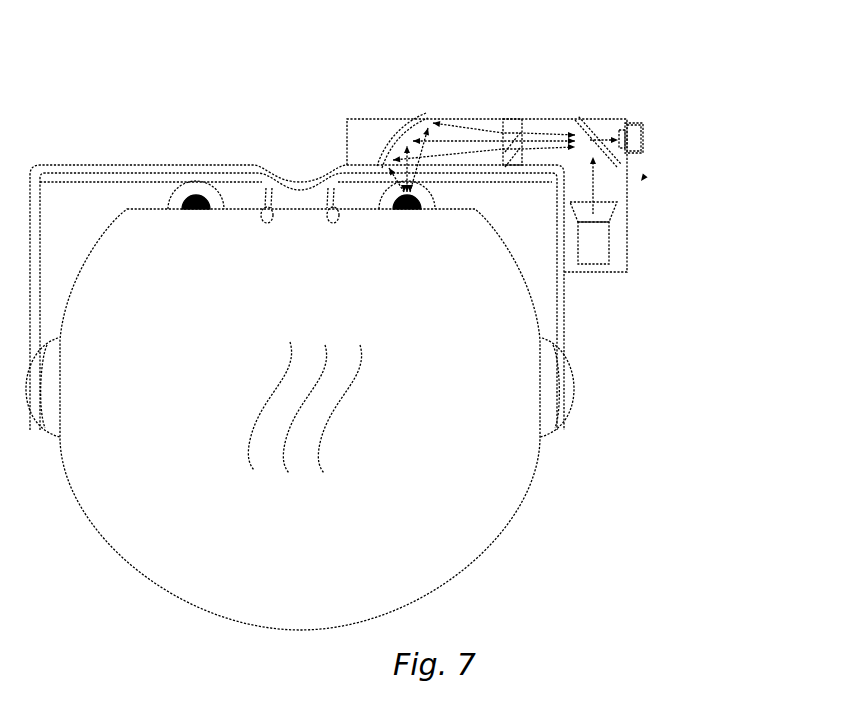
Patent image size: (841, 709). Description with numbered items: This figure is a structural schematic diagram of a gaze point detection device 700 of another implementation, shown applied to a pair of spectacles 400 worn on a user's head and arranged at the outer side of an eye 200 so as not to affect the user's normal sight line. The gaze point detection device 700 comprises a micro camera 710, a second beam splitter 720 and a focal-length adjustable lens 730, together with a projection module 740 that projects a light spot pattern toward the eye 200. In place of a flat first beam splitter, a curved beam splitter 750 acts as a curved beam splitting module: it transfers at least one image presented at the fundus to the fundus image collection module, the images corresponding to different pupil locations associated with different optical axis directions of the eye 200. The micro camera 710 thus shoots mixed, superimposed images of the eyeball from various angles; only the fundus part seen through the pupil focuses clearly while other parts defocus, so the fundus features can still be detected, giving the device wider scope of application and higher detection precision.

The eye 200 is at (398, 200).
The spectacles 400 is at (153, 175).
The gaze point detection device 700 is at (641, 181).
The micro camera 710 is at (640, 128).
The second beam splitter 720 is at (583, 118).
The focal-length adjustable lens 730 is at (513, 125).
The projection module 740 is at (593, 246).
The curved beam splitter 750 is at (428, 120).